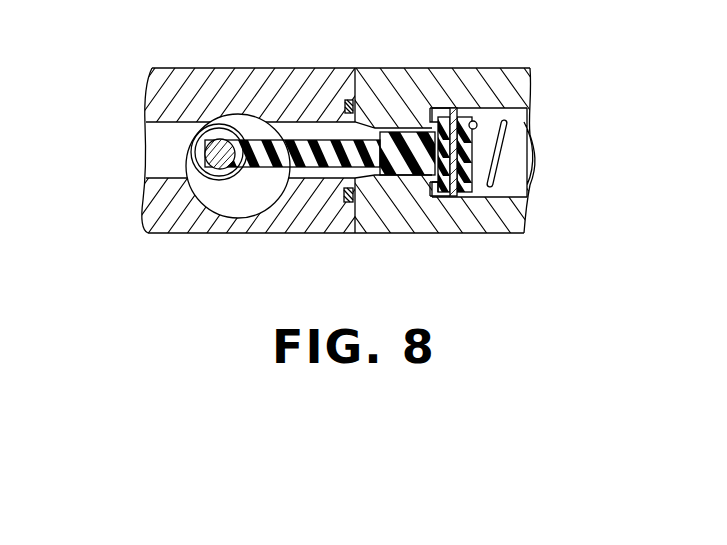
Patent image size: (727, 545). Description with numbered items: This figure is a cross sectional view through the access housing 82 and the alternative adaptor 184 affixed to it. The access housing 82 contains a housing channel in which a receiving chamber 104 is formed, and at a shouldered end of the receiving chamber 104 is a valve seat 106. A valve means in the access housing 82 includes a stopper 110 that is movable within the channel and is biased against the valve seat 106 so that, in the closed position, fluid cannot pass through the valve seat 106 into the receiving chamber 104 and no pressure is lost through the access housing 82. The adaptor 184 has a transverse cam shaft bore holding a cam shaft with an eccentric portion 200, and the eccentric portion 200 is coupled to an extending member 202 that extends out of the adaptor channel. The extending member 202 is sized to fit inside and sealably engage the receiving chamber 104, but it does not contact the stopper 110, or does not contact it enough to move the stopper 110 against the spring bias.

The adaptor 184 is at (146, 92).
The eccentric portion 200 is at (207, 152).
The access housing 82 is at (370, 107).
The extending member 202 is at (412, 135).
The stopper 110 is at (477, 160).
The receiving chamber 104 is at (357, 176).
The valve seat 106 is at (431, 184).